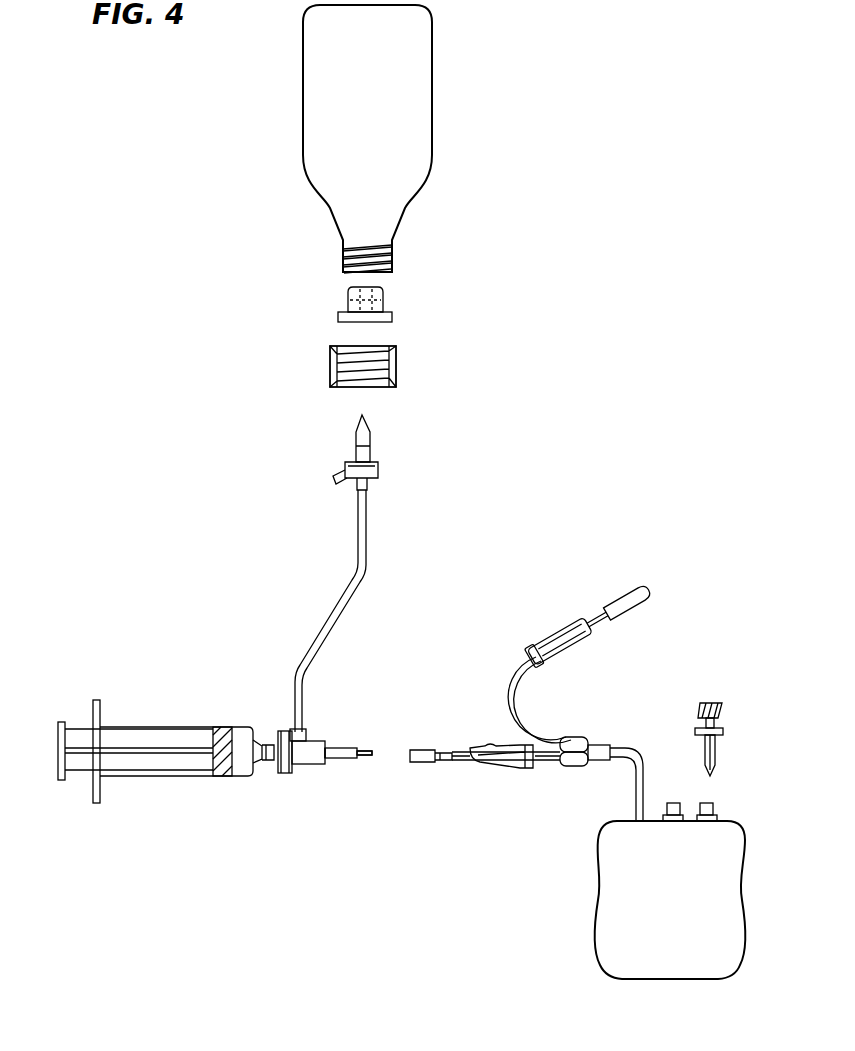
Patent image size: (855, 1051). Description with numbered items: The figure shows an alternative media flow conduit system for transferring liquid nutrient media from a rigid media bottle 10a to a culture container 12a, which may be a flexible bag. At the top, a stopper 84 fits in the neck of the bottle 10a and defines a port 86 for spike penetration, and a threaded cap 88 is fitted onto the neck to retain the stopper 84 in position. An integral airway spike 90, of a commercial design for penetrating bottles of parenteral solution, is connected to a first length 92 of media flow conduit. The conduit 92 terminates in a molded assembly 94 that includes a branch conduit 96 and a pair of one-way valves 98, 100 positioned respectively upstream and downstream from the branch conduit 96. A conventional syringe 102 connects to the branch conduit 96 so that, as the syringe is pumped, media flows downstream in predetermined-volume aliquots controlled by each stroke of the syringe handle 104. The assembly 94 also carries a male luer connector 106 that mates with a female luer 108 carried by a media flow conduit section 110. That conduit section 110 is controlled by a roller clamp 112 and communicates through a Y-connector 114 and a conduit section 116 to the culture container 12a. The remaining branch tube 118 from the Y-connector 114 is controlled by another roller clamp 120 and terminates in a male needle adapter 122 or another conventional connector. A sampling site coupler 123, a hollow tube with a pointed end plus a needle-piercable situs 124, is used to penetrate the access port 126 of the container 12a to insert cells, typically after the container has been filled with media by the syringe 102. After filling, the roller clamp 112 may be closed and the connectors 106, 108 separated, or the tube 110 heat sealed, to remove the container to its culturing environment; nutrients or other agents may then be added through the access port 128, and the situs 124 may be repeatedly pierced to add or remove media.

The media bottle 10a is at (382, 116).
The stopper 84 is at (347, 300).
The port 86 is at (385, 305).
The threaded cap 88 is at (330, 370).
The integral airway spike 90 is at (366, 446).
The first length of media flow conduit 92 is at (368, 568).
The molded assembly 94 is at (305, 766).
The branch conduit 96 is at (278, 730).
The one-way valve 98 is at (305, 738).
The one-way valve 100 is at (328, 745).
The syringe 102 is at (182, 760).
The syringe handle 104 is at (57, 742).
The male luer connector 106 is at (372, 756).
The female luer 108 is at (418, 750).
The media flow conduit section 110 is at (552, 765).
The roller clamp 112 is at (500, 770).
The Y-connector 114 is at (578, 740).
The conduit section 116 is at (628, 752).
The branch tube 118 is at (512, 697).
The roller clamp 120 is at (548, 650).
The male needle adapter 122 is at (640, 605).
The sampling site coupler 123 is at (703, 748).
The needle-piercable situs 124 is at (700, 705).
The access port 126 is at (712, 806).
The access port 128 is at (675, 803).
The culture container 12a is at (686, 893).